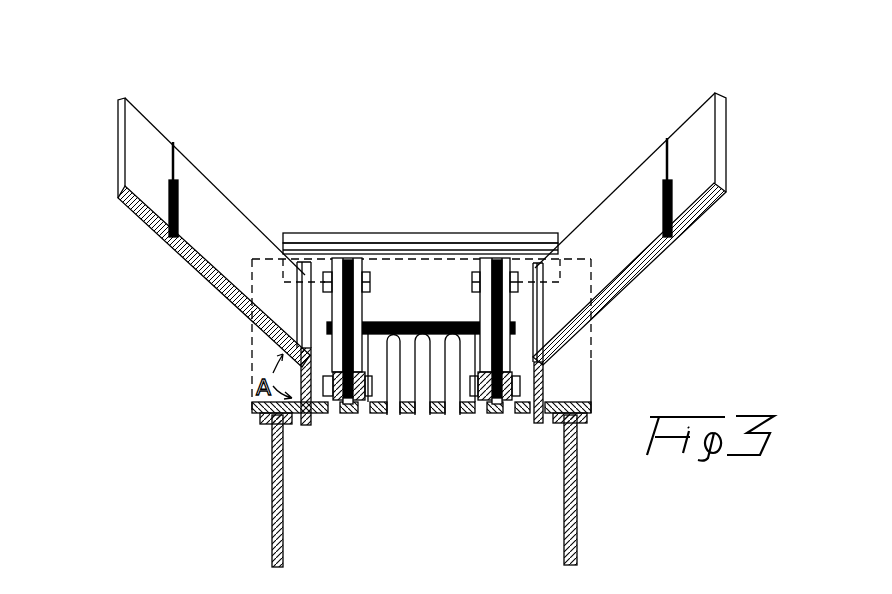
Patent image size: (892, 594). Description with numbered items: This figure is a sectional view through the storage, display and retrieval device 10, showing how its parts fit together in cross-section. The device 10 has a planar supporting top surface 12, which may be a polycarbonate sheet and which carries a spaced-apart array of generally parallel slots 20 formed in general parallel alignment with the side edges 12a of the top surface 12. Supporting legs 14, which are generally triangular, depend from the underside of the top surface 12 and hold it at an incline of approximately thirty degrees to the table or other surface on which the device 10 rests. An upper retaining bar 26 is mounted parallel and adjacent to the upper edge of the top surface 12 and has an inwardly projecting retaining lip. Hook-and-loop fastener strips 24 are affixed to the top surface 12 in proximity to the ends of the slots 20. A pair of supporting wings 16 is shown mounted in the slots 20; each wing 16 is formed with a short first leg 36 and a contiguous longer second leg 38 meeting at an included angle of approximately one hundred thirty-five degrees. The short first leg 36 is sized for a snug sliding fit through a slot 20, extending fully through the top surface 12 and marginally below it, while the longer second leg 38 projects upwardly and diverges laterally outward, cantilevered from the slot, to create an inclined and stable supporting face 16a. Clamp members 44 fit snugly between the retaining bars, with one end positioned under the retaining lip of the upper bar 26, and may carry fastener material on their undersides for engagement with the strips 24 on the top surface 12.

The storage, display and retrieval device 10 is at (505, 168).
The planar supporting top surface 12 is at (397, 285).
The side edges of top surface 12a is at (252, 338).
The supporting legs 14 is at (272, 503).
The supporting wings 16 is at (145, 123).
The supporting face 16a is at (193, 240).
The slots 20 is at (392, 415).
The hook-and-loop fastener strips 24 is at (426, 320).
The upper retaining bar 26 is at (318, 236).
The short first leg 36 is at (302, 425).
The longer second leg 38 is at (147, 222).
The clamp members 44 is at (357, 262).